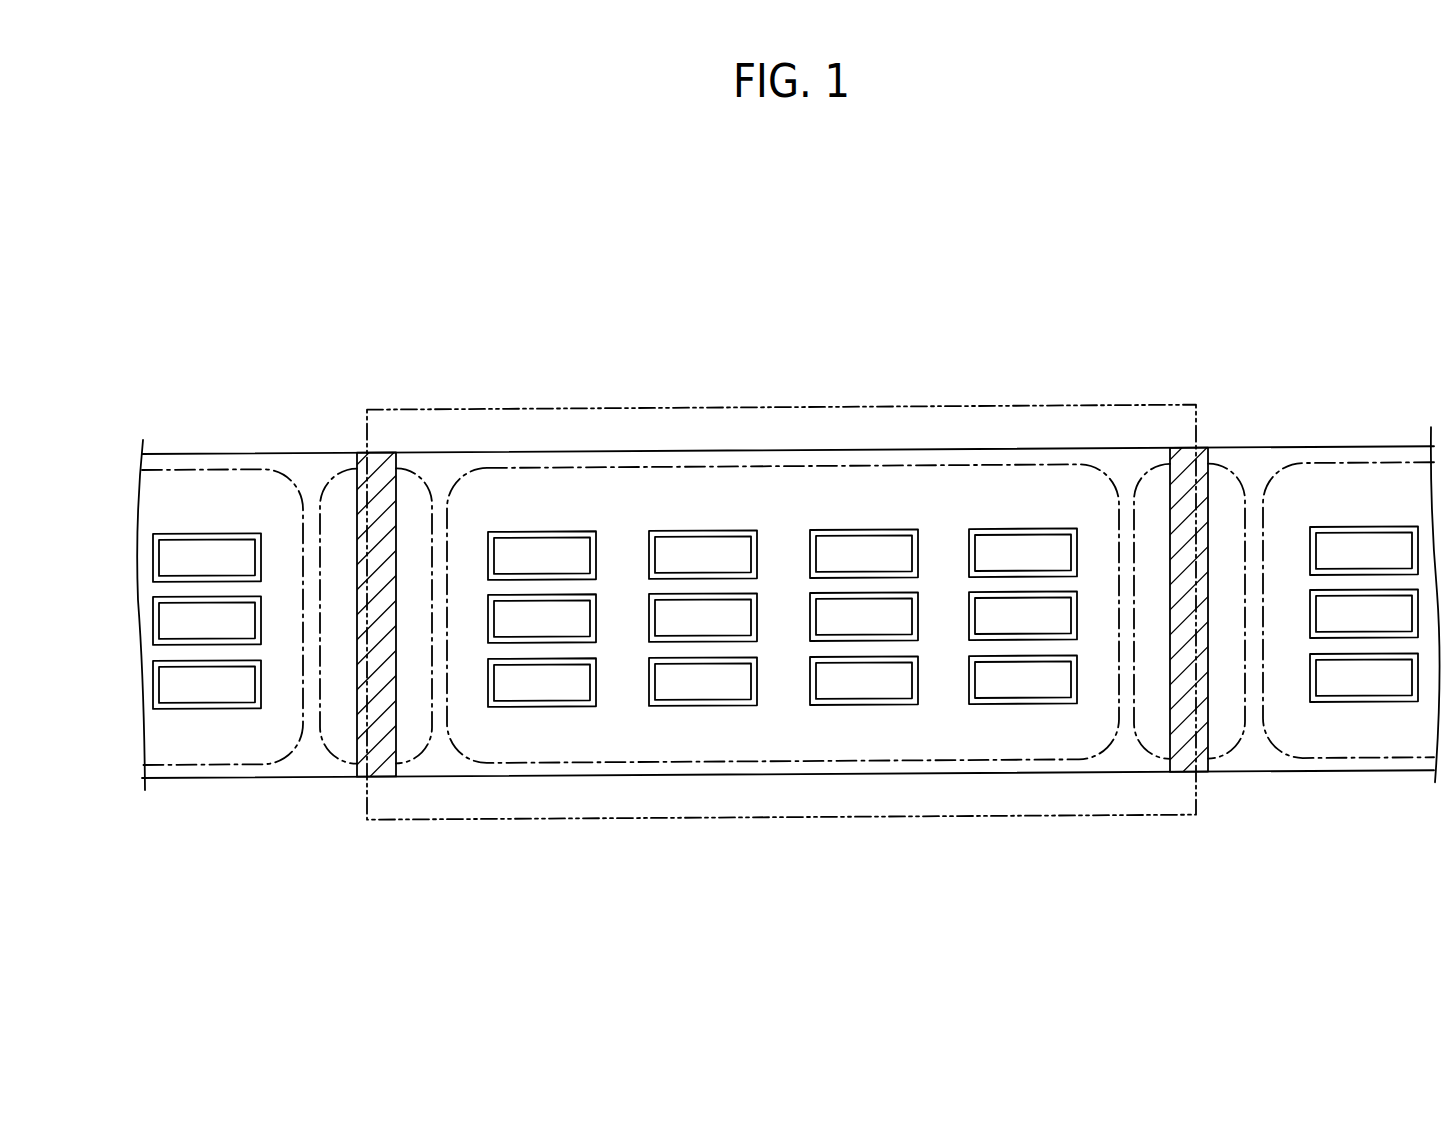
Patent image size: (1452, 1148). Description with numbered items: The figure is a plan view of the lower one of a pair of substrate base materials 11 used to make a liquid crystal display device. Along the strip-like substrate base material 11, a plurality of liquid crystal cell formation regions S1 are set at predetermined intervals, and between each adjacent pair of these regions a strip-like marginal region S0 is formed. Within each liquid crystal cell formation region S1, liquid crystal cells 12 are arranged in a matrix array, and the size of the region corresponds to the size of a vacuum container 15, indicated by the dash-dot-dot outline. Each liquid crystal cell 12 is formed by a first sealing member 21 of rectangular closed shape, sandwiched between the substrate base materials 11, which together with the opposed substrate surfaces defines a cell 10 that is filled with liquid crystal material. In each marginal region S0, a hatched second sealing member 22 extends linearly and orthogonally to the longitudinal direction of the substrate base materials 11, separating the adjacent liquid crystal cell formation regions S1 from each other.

The cell 10 is at (785, 621).
The substrate base material 11 is at (317, 453).
The liquid crystal cell 12 is at (690, 548).
The vacuum container 15 is at (494, 409).
The first sealing member 21 is at (998, 527).
The second sealing member 22 is at (378, 455).
The marginal region S0 is at (347, 765).
The liquid crystal cell formation region S1 is at (228, 765).